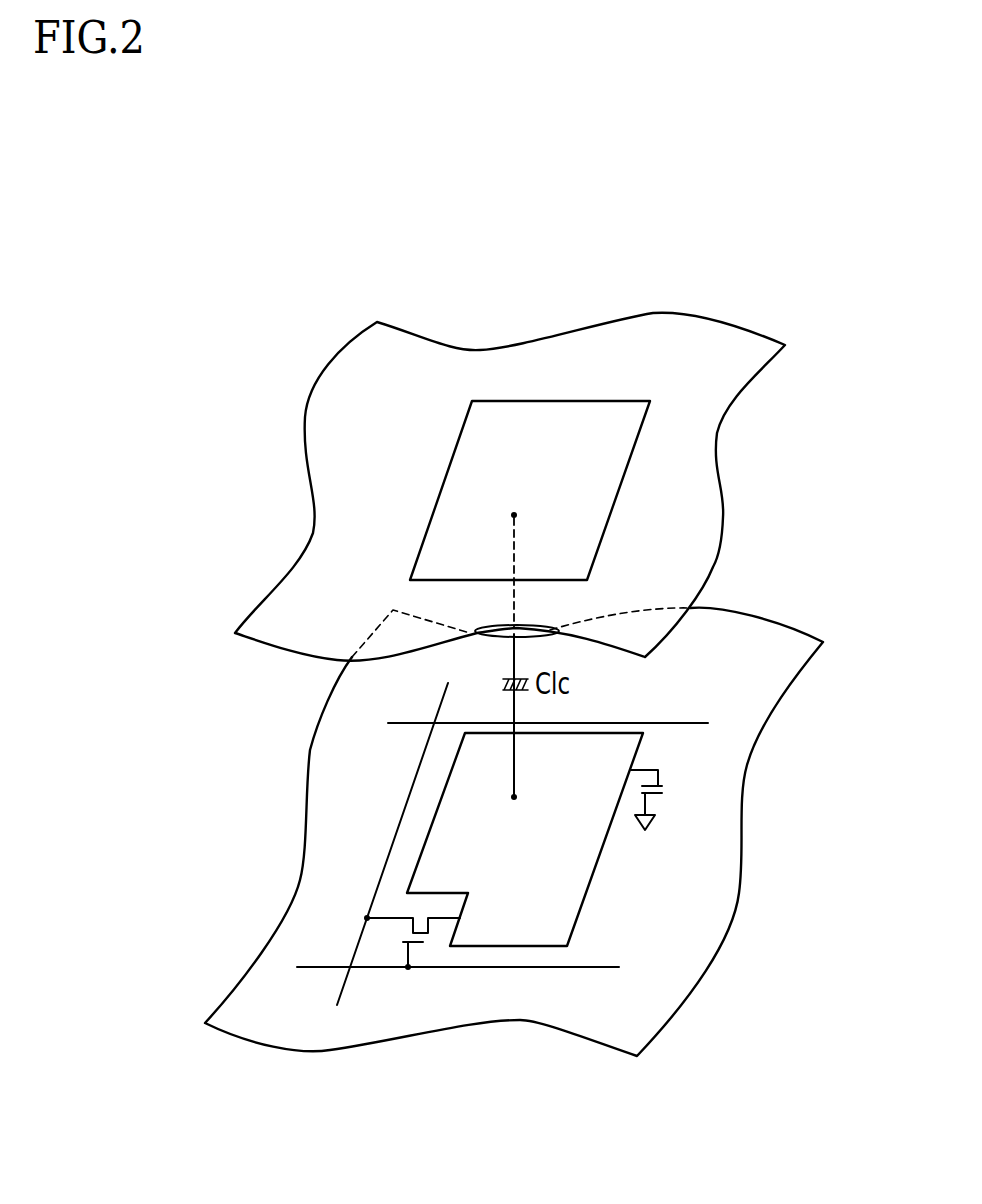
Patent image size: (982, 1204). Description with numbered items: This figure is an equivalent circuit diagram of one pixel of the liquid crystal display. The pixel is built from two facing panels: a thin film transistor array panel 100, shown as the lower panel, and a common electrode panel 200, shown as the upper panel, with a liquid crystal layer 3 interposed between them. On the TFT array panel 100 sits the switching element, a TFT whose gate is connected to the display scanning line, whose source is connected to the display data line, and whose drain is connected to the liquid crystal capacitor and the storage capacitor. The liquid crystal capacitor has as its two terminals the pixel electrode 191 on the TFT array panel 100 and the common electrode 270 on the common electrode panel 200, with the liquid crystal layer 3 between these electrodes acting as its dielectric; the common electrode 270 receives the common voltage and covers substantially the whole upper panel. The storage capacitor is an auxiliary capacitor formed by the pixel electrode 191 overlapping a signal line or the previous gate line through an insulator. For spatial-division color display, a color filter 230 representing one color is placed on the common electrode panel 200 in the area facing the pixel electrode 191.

The liquid crystal layer 3 is at (222, 733).
The thin film transistor array panel 100 is at (759, 812).
The pixel electrode 191 is at (591, 889).
The common electrode panel 200 is at (531, 487).
The color filter 230 is at (617, 505).
The common electrode 270 is at (715, 460).